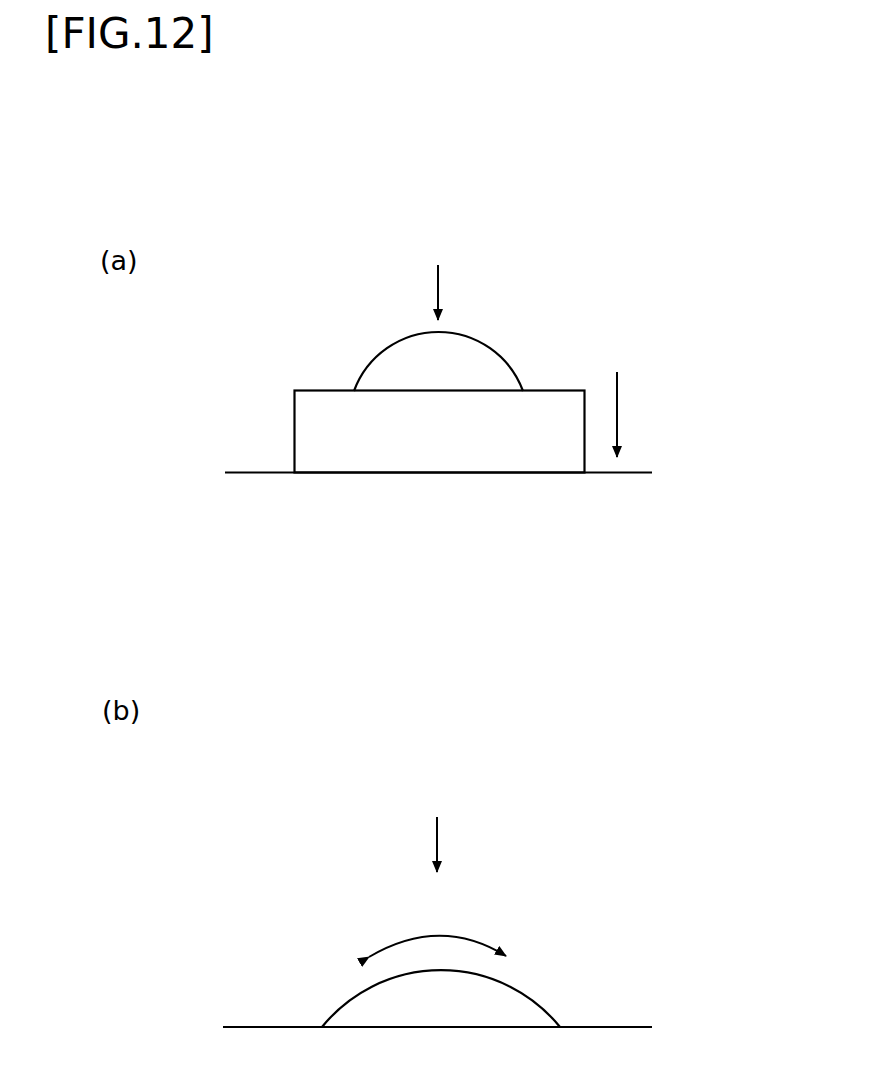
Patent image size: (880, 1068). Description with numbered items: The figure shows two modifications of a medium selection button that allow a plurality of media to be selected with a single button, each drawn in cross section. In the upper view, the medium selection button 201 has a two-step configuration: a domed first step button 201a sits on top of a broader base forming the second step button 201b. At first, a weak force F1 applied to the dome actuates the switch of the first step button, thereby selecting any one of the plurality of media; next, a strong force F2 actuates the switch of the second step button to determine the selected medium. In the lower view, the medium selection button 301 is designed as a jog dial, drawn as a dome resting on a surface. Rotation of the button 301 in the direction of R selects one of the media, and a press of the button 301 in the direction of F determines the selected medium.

The medium selection button 201 is at (463, 334).
The curved pressing portion 201a is at (385, 342).
The base portion 201b is at (552, 390).
The medium selection button 301 is at (612, 858).
The weak force F1 is at (438, 274).
The strong force F2 is at (614, 396).
The press direction F is at (438, 825).
The rotation direction R is at (437, 923).